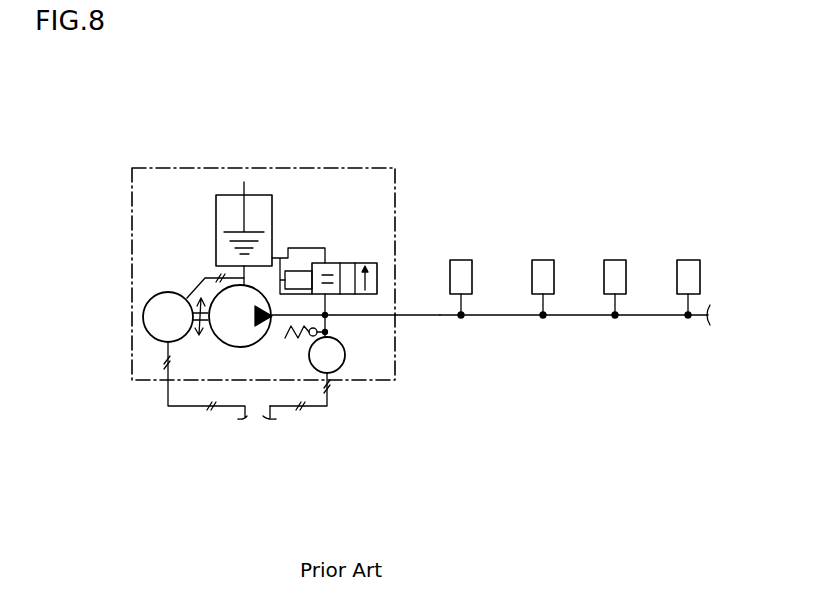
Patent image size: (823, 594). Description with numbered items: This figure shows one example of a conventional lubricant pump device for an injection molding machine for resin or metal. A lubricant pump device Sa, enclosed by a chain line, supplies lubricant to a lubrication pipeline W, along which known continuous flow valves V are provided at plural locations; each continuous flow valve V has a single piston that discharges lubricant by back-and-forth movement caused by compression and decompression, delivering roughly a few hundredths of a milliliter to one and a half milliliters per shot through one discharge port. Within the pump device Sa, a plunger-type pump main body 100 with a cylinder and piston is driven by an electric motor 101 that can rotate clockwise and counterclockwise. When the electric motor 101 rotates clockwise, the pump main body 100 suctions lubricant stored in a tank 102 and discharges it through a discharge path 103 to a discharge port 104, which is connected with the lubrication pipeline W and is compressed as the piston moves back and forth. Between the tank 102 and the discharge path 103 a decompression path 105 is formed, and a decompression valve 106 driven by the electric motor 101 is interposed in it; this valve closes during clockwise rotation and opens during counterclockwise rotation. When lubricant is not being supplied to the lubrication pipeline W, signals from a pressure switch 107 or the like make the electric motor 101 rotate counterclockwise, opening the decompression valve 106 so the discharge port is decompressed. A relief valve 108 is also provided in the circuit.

The pump main body 100 is at (237, 330).
The electric motor 101 is at (150, 320).
The tank 102 is at (261, 208).
The discharge path 103 is at (365, 318).
The discharge port 104 is at (397, 317).
The decompression path 105 is at (313, 250).
The decompression valve 106 is at (358, 262).
The pressure switch 107 is at (333, 363).
The relief valve 108 is at (303, 338).
The lubricant pump device Sa is at (386, 165).
The continuous flow valve V is at (460, 270).
The lubrication pipeline W is at (585, 317).